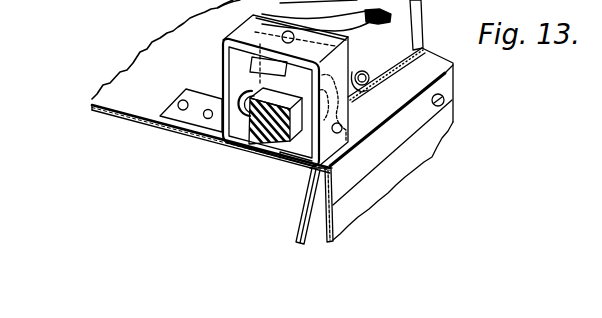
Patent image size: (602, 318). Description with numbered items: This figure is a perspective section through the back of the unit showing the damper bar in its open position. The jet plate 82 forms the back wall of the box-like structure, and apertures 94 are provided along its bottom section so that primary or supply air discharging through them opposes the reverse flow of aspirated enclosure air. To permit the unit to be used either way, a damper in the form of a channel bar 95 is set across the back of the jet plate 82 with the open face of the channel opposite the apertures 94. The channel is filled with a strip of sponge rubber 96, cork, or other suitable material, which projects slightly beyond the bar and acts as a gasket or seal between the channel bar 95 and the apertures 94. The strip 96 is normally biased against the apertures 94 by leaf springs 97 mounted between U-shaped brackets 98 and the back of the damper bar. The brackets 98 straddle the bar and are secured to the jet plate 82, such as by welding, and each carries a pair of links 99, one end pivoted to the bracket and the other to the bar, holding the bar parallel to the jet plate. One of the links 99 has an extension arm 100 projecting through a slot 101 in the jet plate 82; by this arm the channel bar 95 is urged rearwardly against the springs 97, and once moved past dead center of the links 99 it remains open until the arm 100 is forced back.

The jet plate 82 is at (130, 100).
The apertures 94 is at (258, 152).
The channel bar 95 is at (234, 140).
The strip of sponge rubber 96 is at (258, 141).
The leaf springs 97 is at (400, 18).
The U-shaped brackets 98 is at (226, 44).
The links 99 is at (238, 92).
The extension arm 100 is at (297, 228).
The slot 101 is at (300, 161).